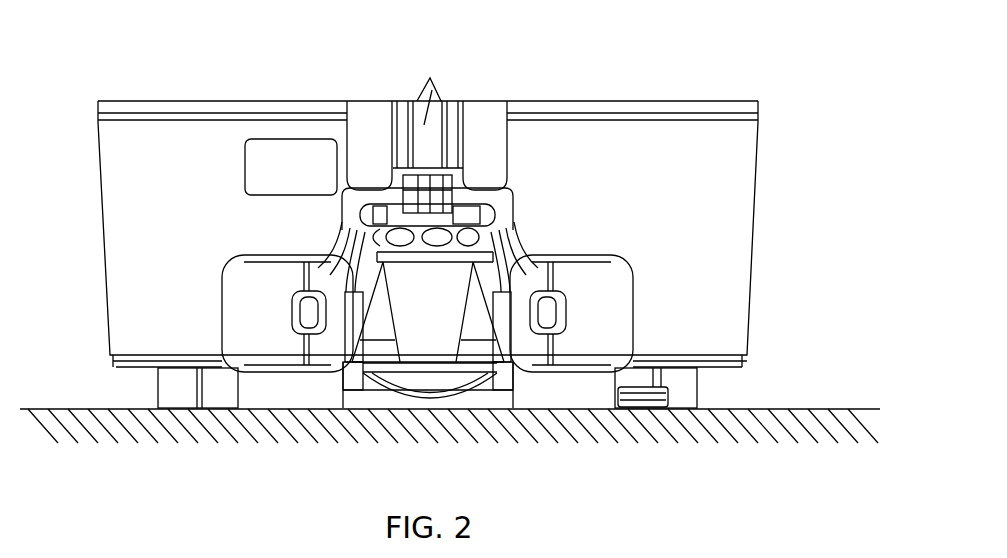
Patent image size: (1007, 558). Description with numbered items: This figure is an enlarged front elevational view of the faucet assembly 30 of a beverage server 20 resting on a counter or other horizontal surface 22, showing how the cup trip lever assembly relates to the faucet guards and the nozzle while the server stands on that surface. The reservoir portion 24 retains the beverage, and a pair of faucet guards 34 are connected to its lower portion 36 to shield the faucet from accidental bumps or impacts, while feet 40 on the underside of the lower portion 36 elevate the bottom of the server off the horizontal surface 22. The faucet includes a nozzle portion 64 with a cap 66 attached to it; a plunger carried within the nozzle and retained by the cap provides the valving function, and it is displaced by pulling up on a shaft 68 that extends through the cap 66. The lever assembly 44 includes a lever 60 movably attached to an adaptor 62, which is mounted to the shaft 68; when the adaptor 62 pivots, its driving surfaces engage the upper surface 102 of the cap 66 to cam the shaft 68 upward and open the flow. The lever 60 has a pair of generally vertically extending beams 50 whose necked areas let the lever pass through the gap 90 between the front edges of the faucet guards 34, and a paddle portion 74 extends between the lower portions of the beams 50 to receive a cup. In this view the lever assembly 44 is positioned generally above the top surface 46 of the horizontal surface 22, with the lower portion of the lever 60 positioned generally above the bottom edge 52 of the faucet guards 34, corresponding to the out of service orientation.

The beverage server 20 is at (102, 40).
The horizontal surface 22 is at (846, 370).
The reservoir portion 24 is at (770, 116).
The faucet assembly 30 is at (610, 175).
The faucet guards 34 is at (237, 313).
The lower portion 36 is at (731, 272).
The feet 40 is at (688, 394).
The lever assembly 44 is at (560, 244).
The top surface 46 is at (793, 403).
The beams 50 is at (345, 343).
The bottom edge 52 is at (545, 370).
The lever 60 is at (333, 212).
The adaptor 62 is at (410, 168).
The nozzle portion 64 is at (448, 342).
The cap 66 is at (440, 242).
The shaft 68 is at (430, 212).
The paddle portion 74 is at (433, 391).
The gap 90 is at (433, 265).
The upper surface 102 is at (382, 197).